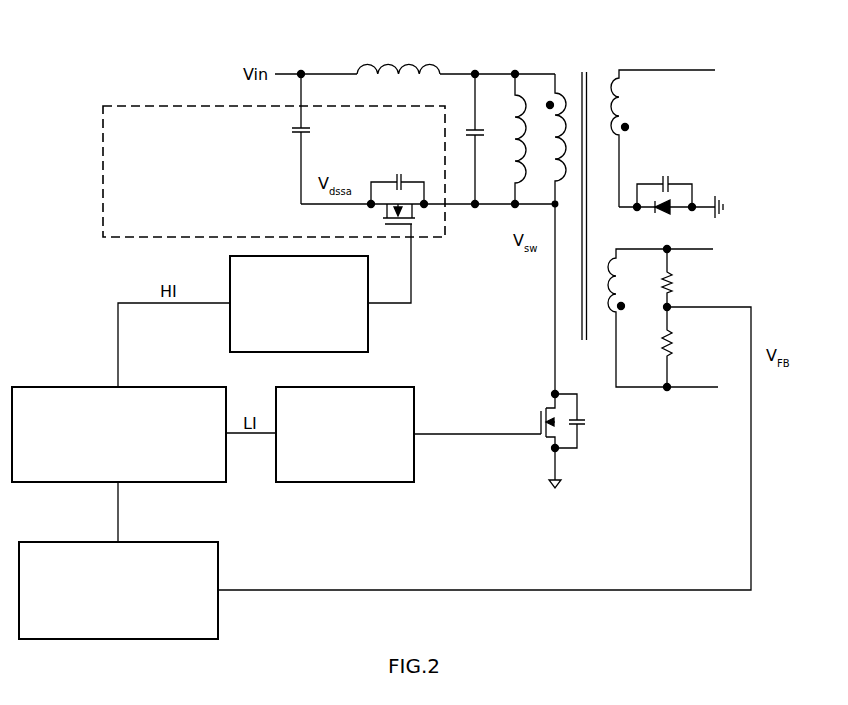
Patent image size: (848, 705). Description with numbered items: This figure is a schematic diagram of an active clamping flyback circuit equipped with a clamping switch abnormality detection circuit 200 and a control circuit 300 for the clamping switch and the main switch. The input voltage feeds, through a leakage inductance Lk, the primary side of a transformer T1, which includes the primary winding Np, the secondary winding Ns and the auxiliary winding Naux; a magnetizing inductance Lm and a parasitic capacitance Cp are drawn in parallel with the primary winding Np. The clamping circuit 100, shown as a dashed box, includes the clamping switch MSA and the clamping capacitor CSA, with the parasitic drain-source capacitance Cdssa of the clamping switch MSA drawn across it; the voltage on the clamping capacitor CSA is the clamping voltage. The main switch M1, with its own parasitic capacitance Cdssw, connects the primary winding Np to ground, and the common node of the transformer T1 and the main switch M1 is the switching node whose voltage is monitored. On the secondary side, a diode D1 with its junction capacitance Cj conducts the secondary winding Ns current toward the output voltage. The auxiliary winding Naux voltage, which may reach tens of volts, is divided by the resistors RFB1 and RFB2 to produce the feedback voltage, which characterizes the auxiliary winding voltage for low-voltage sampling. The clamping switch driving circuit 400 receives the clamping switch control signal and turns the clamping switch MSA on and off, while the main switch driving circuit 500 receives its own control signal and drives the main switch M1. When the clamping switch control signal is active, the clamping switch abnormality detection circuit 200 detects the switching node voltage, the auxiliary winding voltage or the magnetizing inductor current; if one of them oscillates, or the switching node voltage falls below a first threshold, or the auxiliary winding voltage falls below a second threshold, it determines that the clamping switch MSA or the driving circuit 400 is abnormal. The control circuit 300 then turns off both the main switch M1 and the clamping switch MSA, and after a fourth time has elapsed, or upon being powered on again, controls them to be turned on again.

The clamping circuit 100 is at (274, 171).
The clamping switch abnormality detection circuit 200 is at (118, 590).
The control circuit for the clamping switch and the main switch 300 is at (119, 434).
The clamping switch driving circuit 400 is at (299, 304).
The main switch driving circuit 500 is at (345, 434).
The clamping capacitor CSA is at (296, 139).
The clamping switch MSA is at (368, 253).
The parasitic capacitor of clamping switch Cdssa is at (394, 176).
The leakage inductor Lk is at (398, 85).
The magnetizing inductor Lm is at (506, 139).
The parasitic capacitor Cp is at (468, 139).
The primary winding Np is at (551, 128).
The secondary winding Ns is at (674, 126).
The auxiliary winding Naux is at (681, 306).
The transformer T1 is at (582, 194).
The output diode D1 is at (671, 216).
The junction capacitor of diode Cj is at (664, 183).
The feedback resistor RFB1 is at (691, 278).
The feedback resistor RFB2 is at (691, 349).
The main switch M1 is at (487, 440).
The parasitic capacitor of main switch Cdssw is at (589, 421).